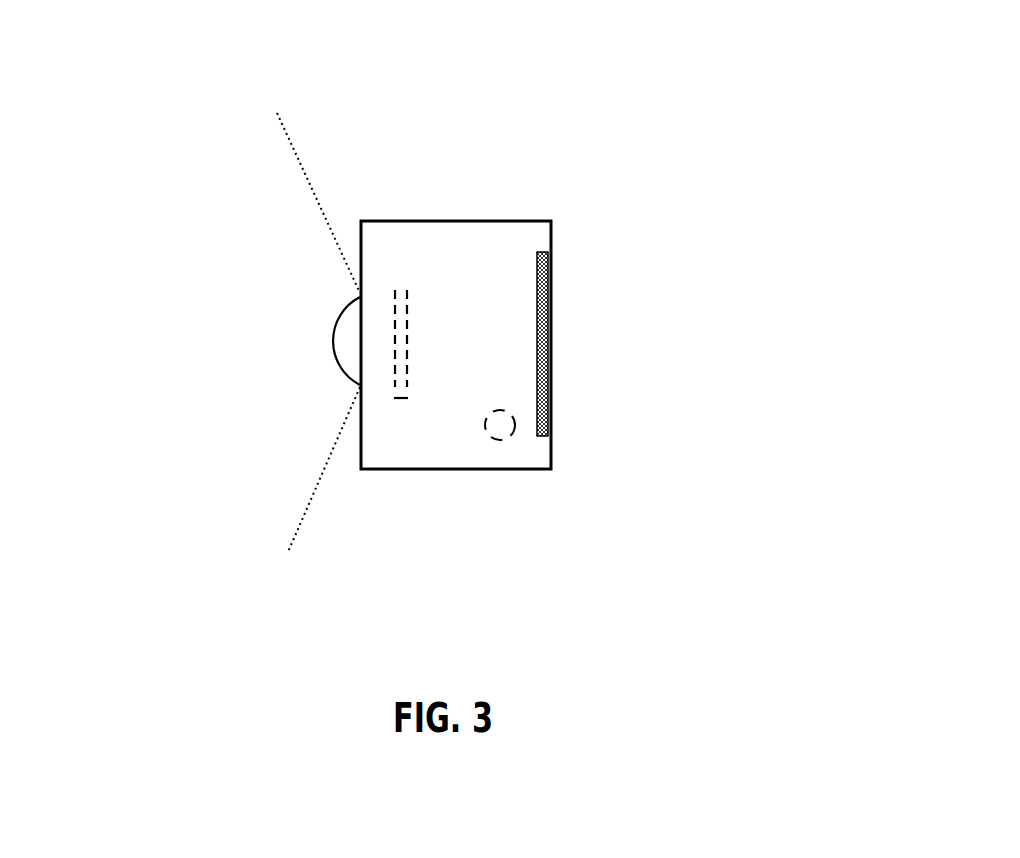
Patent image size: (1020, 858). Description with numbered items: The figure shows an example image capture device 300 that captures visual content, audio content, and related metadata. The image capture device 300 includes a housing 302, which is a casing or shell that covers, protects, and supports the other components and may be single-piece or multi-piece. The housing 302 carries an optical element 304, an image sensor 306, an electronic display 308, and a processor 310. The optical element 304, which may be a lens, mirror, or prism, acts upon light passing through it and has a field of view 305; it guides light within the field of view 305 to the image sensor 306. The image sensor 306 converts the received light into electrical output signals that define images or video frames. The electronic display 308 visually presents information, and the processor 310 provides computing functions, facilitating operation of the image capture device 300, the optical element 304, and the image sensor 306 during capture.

The image capture device 300 is at (603, 122).
The housing 302 is at (447, 470).
The optical element 304 is at (357, 376).
The field of view 305 is at (325, 227).
The image sensor 306 is at (405, 290).
The electronic display 308 is at (550, 345).
The processor 310 is at (493, 438).